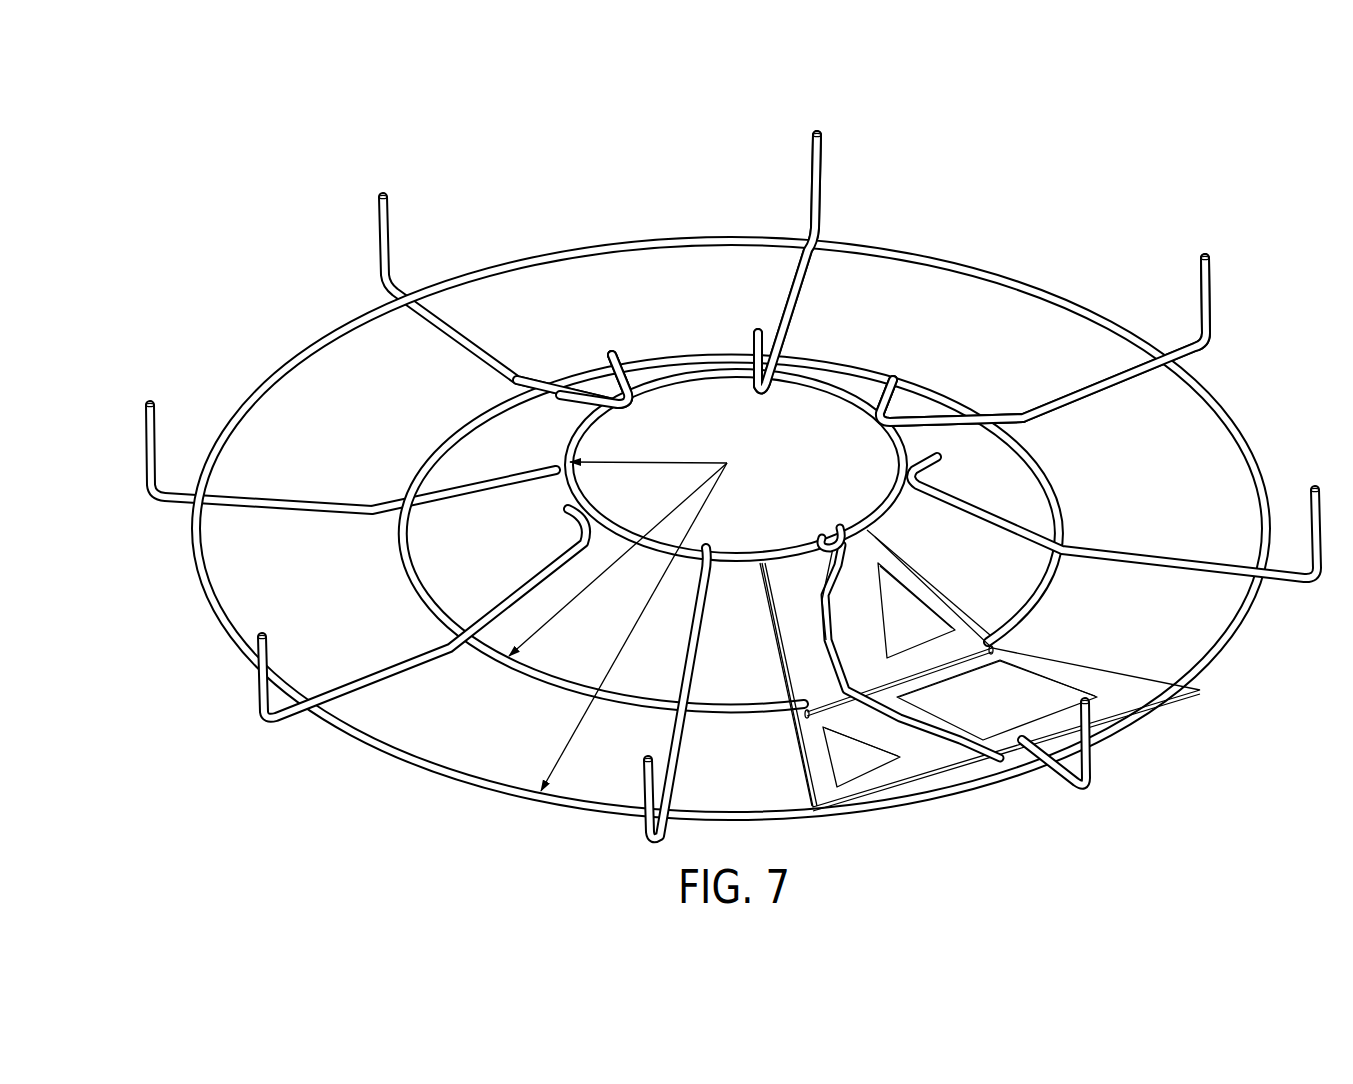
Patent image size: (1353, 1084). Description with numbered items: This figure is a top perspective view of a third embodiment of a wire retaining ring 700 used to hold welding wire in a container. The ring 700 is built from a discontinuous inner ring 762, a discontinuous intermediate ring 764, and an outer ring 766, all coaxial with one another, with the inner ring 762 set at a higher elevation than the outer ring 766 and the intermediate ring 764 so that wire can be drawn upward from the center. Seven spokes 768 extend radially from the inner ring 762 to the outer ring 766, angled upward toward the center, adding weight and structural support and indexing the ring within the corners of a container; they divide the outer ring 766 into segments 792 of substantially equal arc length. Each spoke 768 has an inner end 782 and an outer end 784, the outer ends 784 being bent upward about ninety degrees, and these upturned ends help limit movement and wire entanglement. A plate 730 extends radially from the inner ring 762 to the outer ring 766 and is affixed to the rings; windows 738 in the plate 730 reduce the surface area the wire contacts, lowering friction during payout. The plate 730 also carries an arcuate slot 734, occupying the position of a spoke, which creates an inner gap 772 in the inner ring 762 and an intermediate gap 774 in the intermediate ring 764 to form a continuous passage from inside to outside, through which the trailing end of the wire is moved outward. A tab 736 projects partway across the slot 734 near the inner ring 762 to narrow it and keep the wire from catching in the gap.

The wire retaining ring 700 is at (228, 132).
The plate 730 is at (1037, 708).
The slot 734 is at (833, 583).
The tab 736 is at (825, 537).
The windows 738 is at (900, 608).
The inner ring 762 is at (807, 387).
The intermediate ring 764 is at (915, 390).
The outer ring 766 is at (1073, 310).
The spokes 768 is at (1142, 555).
The inner gap 772 is at (835, 530).
The intermediate gap 774 is at (845, 690).
The inner end 782 is at (605, 350).
The outer end 784 is at (1212, 283).
The segments 792 is at (378, 200).